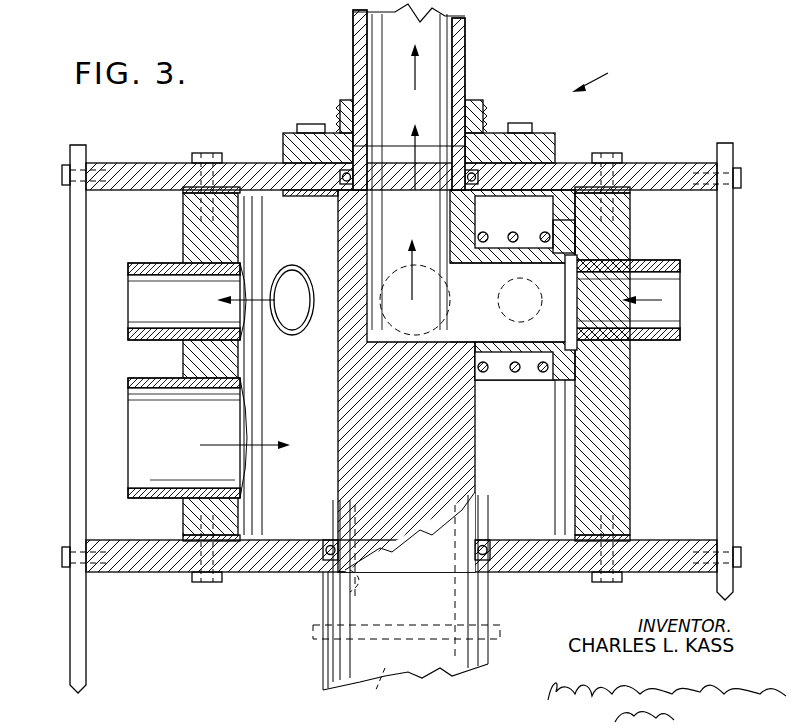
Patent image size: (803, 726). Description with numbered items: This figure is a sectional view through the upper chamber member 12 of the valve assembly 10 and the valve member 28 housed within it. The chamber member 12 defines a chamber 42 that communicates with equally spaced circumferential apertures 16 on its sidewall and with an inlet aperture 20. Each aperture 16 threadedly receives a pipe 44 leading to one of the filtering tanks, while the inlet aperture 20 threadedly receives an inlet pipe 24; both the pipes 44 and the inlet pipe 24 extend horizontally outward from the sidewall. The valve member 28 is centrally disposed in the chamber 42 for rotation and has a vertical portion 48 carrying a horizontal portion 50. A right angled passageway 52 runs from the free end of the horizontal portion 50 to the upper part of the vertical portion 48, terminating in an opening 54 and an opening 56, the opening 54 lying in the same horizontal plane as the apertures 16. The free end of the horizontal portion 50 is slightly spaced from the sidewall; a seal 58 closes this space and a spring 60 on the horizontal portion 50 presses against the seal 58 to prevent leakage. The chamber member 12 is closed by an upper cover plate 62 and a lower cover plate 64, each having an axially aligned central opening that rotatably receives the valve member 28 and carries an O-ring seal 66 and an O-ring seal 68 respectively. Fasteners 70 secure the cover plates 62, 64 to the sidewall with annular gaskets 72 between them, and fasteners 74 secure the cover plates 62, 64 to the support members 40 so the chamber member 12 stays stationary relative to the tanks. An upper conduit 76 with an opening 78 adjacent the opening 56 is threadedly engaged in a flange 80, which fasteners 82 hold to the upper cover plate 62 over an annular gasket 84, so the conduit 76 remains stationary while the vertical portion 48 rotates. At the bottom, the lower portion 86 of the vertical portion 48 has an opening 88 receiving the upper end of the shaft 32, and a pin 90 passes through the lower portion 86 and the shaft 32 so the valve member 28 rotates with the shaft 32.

The valve assembly 10 is at (600, 70).
The upper chamber member 12 is at (620, 462).
The circumferential apertures 16 is at (300, 282).
The inlet aperture 20 is at (265, 420).
The inlet pipe 24 is at (180, 379).
The valve member 28 is at (343, 490).
The shaft 32 is at (380, 685).
The support members 40 is at (72, 466).
The chamber 42 is at (508, 472).
The pipe 44 is at (183, 263).
The vertical portion 48 is at (345, 360).
The horizontal portion 50 is at (505, 372).
The right angled passageway 52 is at (477, 302).
The opening 54 is at (560, 292).
The opening 56 is at (432, 150).
The seal 58 is at (545, 233).
The spring 60 is at (483, 233).
The upper cover plate 62 is at (268, 172).
The lower cover plate 64 is at (268, 566).
The O-ring seal 66 is at (343, 183).
The O-ring seal 68 is at (490, 562).
The fasteners 70 is at (205, 153).
The annular gaskets 72 is at (188, 195).
The fasteners 74 is at (62, 176).
The upper conduit 76 is at (462, 33).
The opening 78 is at (432, 185).
The flange 80 is at (478, 112).
The fasteners 82 is at (314, 124).
The annular gasket 84 is at (556, 160).
The lower portion 86 is at (333, 668).
The opening 88 is at (350, 597).
The pin 90 is at (313, 633).